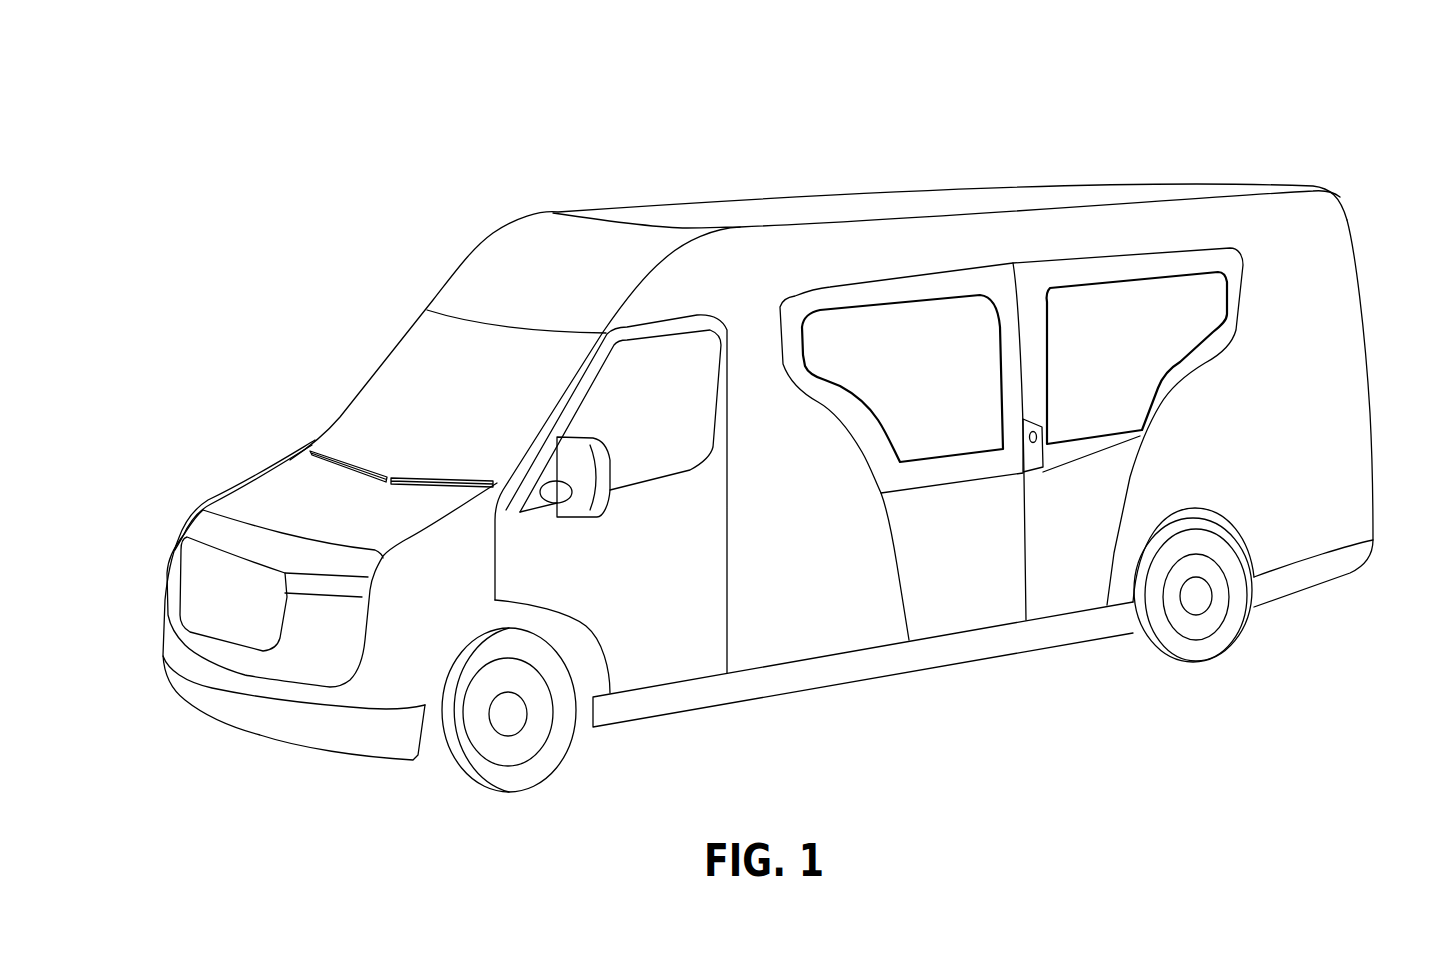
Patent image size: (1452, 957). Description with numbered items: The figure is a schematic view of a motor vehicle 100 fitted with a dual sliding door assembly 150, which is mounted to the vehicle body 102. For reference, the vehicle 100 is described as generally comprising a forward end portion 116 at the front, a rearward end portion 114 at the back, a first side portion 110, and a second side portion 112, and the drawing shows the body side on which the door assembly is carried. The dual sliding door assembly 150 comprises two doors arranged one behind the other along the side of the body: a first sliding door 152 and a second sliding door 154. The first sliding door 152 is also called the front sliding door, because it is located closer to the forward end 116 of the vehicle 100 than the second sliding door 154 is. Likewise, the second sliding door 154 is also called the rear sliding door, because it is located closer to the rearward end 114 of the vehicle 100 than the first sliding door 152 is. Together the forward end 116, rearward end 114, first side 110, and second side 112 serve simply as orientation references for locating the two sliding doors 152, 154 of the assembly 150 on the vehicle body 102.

The vehicle 100 is at (594, 128).
The vehicle body 102 is at (1282, 452).
The first side portion 110 is at (846, 633).
The second side portion 112 is at (360, 331).
The rearward end portion 114 is at (1370, 210).
The forward end portion 116 is at (170, 737).
The dual sliding door assembly 150 is at (1000, 233).
The first sliding door 152 is at (983, 560).
The second sliding door 154 is at (1093, 539).